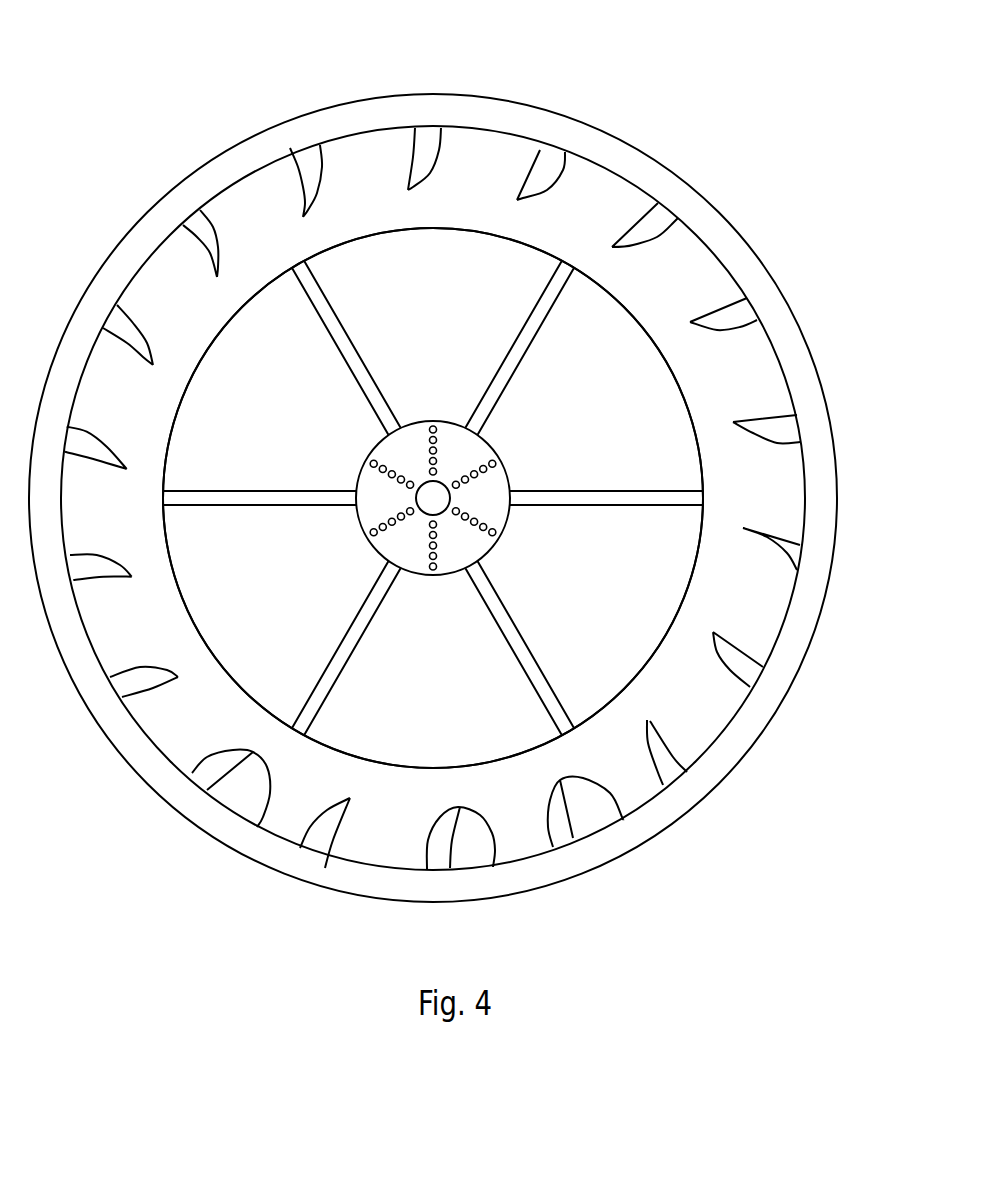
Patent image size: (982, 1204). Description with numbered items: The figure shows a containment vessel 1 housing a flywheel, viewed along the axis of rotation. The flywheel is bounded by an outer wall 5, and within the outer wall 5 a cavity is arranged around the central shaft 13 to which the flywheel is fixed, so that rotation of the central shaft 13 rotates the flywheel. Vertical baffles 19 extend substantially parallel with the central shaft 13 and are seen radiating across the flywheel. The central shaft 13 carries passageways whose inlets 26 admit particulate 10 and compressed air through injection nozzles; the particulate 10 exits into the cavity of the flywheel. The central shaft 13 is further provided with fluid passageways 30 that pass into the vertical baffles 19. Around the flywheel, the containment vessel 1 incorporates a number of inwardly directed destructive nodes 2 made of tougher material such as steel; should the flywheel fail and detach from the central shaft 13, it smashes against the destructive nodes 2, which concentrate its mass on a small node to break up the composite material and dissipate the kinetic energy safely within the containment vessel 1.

The containment vessel 1 is at (573, 858).
The destructive nodes 2 is at (253, 752).
The outer wall 5 is at (480, 234).
The particulate 10 is at (247, 578).
The central shaft 13 is at (418, 573).
The vertical baffles 19 is at (538, 247).
The inlets 26 is at (473, 478).
The fluid passageways 30 is at (432, 497).